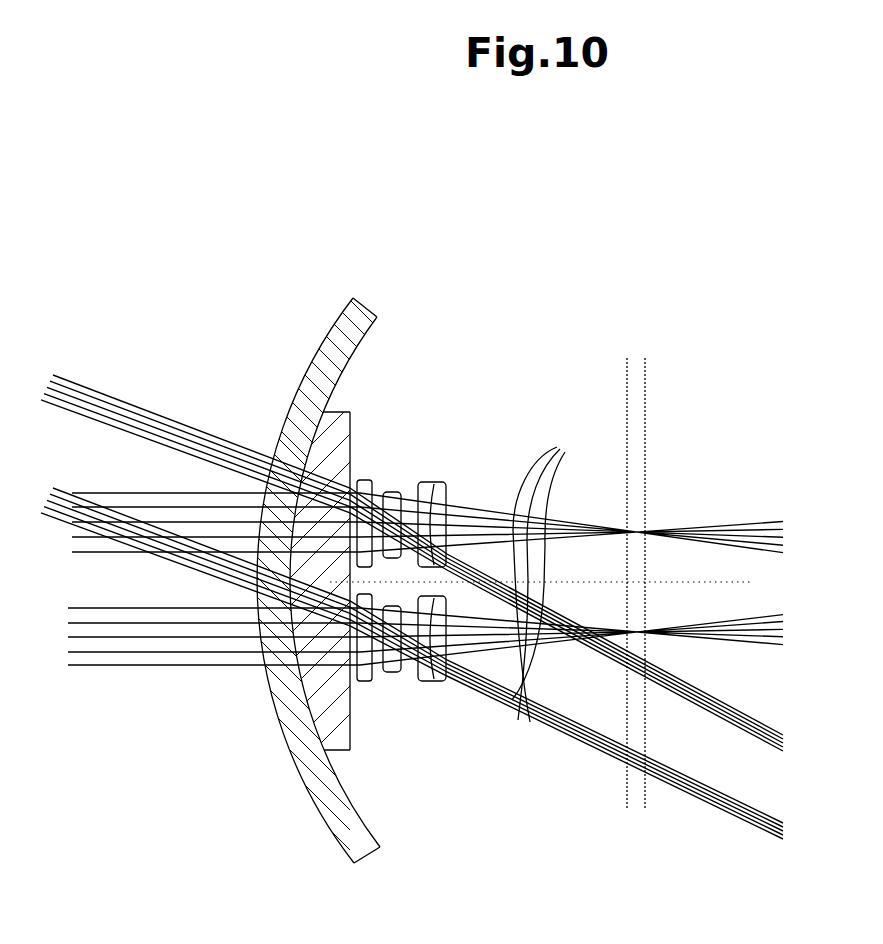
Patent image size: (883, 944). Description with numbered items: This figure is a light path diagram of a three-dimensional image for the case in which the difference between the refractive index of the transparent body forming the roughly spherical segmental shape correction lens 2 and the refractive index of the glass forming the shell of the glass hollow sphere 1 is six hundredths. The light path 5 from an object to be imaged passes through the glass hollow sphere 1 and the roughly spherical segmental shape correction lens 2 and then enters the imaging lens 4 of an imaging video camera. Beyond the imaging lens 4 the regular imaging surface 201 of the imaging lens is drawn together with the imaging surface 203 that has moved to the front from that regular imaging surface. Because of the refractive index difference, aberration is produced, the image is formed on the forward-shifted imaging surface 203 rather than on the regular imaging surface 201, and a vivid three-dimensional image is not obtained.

The glass hollow sphere 1 is at (822, 337).
The roughly spherical segmental shape correction lens 2 is at (352, 428).
The imaging lens of an imaging video camera 4 is at (450, 458).
The light path from an object to be imaged 5 is at (551, 564).
The imaging surface moving to the front from a regular imaging surface of an imaging 203 is at (627, 360).
The regular imaging surface of an imaging lens 201 is at (648, 420).